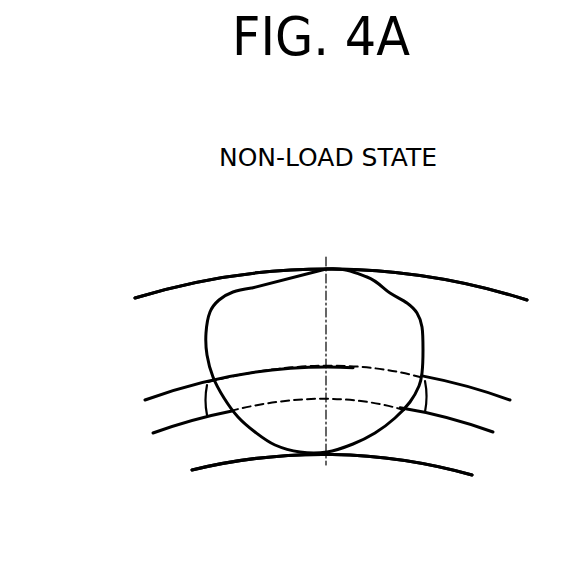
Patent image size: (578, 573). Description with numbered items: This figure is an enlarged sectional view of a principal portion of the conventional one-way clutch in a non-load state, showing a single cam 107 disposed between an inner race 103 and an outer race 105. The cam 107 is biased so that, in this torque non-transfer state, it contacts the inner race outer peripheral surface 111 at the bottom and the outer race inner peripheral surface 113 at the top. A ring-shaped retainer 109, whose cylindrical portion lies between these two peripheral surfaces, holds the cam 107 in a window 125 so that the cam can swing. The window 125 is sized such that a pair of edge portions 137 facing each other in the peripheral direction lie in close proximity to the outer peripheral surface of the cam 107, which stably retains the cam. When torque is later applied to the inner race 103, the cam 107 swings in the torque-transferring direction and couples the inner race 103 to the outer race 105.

The inner race 103 is at (275, 511).
The outer race 105 is at (228, 263).
The cam 107 is at (418, 310).
The retainer 109 is at (467, 401).
The inner race outer peripheral surface 111 is at (450, 468).
The outer race inner peripheral surface 113 is at (168, 292).
The window 125 is at (425, 380).
The edge portion 137 is at (207, 396).